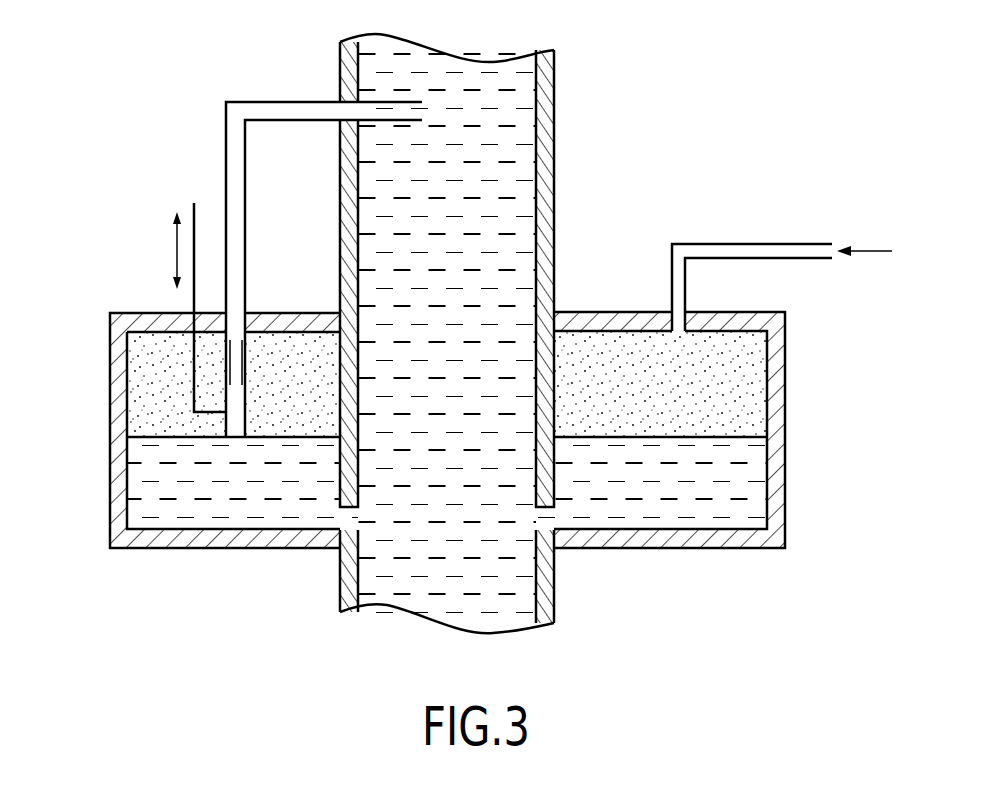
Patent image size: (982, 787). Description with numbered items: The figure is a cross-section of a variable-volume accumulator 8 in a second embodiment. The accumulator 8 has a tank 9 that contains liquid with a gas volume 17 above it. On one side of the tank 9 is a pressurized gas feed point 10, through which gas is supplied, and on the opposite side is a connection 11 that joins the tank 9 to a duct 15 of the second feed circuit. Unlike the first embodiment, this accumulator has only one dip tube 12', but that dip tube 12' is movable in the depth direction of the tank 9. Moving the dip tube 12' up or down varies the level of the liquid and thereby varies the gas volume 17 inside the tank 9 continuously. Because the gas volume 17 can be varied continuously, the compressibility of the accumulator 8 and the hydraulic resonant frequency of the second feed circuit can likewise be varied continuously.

The accumulator 8 is at (466, 431).
The tank 9 is at (125, 482).
The pressurized gas feed point 10 is at (675, 330).
The connection 11 is at (345, 520).
The dip tube 12' is at (289, 269).
The duct 15 is at (548, 131).
The gas volume 17 is at (612, 345).